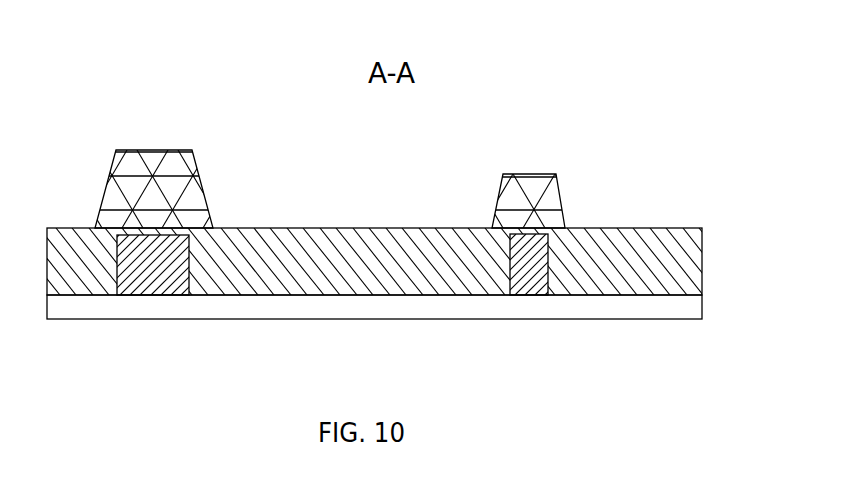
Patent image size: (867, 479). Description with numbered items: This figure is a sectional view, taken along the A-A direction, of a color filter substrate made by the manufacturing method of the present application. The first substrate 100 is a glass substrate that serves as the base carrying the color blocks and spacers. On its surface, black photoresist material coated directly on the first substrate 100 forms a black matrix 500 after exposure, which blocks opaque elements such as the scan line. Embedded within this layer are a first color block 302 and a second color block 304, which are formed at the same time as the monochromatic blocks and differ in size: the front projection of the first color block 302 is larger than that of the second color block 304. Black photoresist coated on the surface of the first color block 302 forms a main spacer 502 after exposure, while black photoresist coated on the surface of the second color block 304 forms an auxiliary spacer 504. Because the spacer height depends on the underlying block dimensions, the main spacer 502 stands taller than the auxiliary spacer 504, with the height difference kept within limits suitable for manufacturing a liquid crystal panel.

The first substrate 100 is at (362, 307).
The black matrix 500 is at (293, 250).
The first color block 302 is at (147, 281).
The second color block 304 is at (527, 278).
The main spacer 502 is at (170, 168).
The auxiliary spacer 504 is at (535, 182).